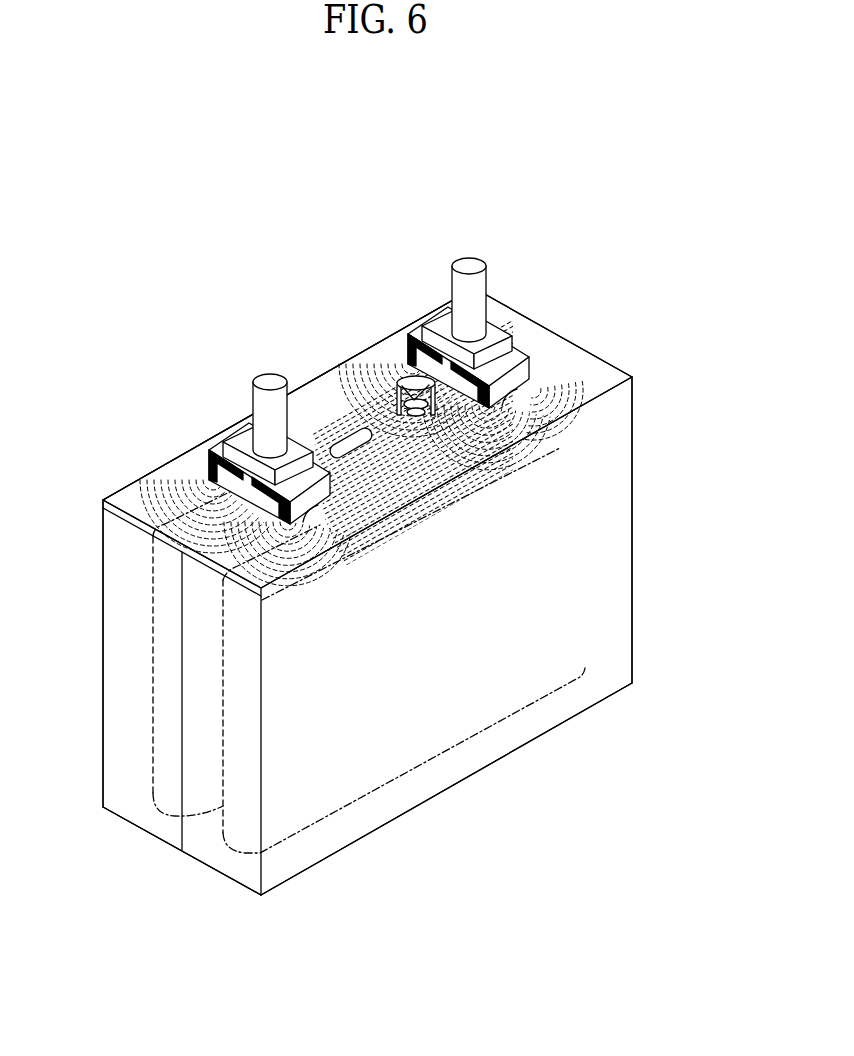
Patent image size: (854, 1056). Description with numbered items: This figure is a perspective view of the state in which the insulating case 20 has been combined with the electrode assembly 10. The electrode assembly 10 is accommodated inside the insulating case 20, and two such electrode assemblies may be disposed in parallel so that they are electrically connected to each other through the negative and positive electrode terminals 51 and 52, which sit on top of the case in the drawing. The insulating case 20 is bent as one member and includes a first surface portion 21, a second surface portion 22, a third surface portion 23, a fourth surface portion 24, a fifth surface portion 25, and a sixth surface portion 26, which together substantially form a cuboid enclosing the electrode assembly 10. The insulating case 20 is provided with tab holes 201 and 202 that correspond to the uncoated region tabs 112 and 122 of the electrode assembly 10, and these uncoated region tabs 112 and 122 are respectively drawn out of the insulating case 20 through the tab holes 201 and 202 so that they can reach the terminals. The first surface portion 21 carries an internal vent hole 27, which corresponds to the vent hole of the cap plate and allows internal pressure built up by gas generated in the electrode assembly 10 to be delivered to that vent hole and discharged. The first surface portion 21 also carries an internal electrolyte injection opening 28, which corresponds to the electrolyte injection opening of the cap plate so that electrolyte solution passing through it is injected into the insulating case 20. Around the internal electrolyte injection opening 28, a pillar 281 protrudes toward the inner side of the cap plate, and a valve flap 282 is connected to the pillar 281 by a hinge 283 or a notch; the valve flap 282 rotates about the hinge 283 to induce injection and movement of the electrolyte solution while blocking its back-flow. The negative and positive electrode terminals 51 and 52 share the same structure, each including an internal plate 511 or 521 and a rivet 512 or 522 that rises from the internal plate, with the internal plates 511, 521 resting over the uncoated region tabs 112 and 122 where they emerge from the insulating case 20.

The electrode assembly 10 is at (583, 527).
The insulating case 20 is at (566, 327).
The first surface portion 21 is at (148, 490).
The second surface portion 22 is at (102, 565).
The third surface portion 23 is at (342, 836).
The fourth surface portion 24 is at (218, 855).
The fifth surface portion 25 is at (632, 568).
The sixth surface portion 26 is at (301, 880).
The internal vent hole 27 is at (362, 428).
The internal electrolyte injection opening 28 is at (421, 431).
The pillar 281 is at (383, 392).
The valve flap 282 is at (411, 391).
The hinge 283 is at (417, 413).
The negative electrode terminal 51 is at (253, 412).
The internal plate 511 is at (243, 437).
The rivet 512 is at (272, 378).
The uncoated region tab 112 is at (218, 448).
The positive electrode terminal 52 is at (459, 296).
The internal plate 521 is at (492, 333).
The rivet 522 is at (470, 262).
The uncoated region tab 122 is at (415, 330).
The tab hole 201 is at (318, 520).
The tab hole 202 is at (514, 393).